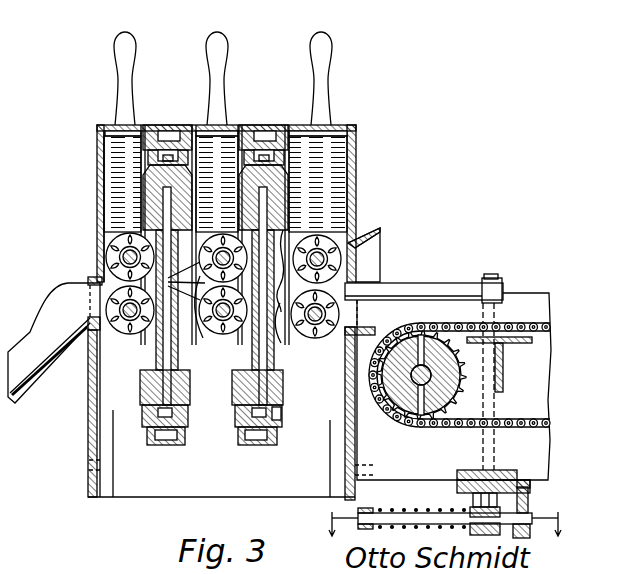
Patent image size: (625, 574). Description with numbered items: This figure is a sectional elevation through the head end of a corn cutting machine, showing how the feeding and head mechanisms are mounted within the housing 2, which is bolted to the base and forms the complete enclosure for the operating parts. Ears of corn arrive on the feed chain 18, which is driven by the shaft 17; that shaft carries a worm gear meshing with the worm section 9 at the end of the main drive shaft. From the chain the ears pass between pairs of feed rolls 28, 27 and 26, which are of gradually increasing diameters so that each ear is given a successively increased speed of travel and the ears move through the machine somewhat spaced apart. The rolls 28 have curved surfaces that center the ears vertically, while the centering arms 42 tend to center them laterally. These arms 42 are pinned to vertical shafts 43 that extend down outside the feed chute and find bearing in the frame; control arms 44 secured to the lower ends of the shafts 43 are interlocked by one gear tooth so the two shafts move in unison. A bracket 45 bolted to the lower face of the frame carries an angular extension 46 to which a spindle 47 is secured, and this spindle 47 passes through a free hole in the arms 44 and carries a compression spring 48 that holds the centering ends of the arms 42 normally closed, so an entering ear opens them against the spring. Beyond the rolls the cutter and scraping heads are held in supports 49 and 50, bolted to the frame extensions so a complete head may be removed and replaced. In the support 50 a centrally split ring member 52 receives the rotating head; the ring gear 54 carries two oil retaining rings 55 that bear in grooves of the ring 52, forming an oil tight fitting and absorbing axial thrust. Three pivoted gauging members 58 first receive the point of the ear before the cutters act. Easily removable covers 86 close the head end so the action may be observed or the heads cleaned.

The housing 2 is at (98, 418).
The worm section 9 is at (442, 534).
The shaft 17 is at (390, 405).
The feed chain 18 is at (459, 428).
The feed rolls 26 is at (110, 256).
The feed rolls 27 is at (216, 334).
The feed rolls 28 is at (343, 263).
The centering arms 42 is at (428, 292).
The vertical shafts 43 is at (492, 278).
The control arms 44 is at (462, 477).
The bracket 45 is at (527, 483).
The angular extension 46 is at (527, 507).
The spindle 47 is at (432, 525).
The compression spring 48 is at (408, 526).
The support 49 is at (166, 445).
The support 50 is at (258, 445).
The ring member 52 is at (279, 416).
The ring gear 54 is at (250, 393).
The oil retaining rings 55 is at (240, 413).
The gauging members 58 is at (322, 336).
The covers 86 is at (142, 125).